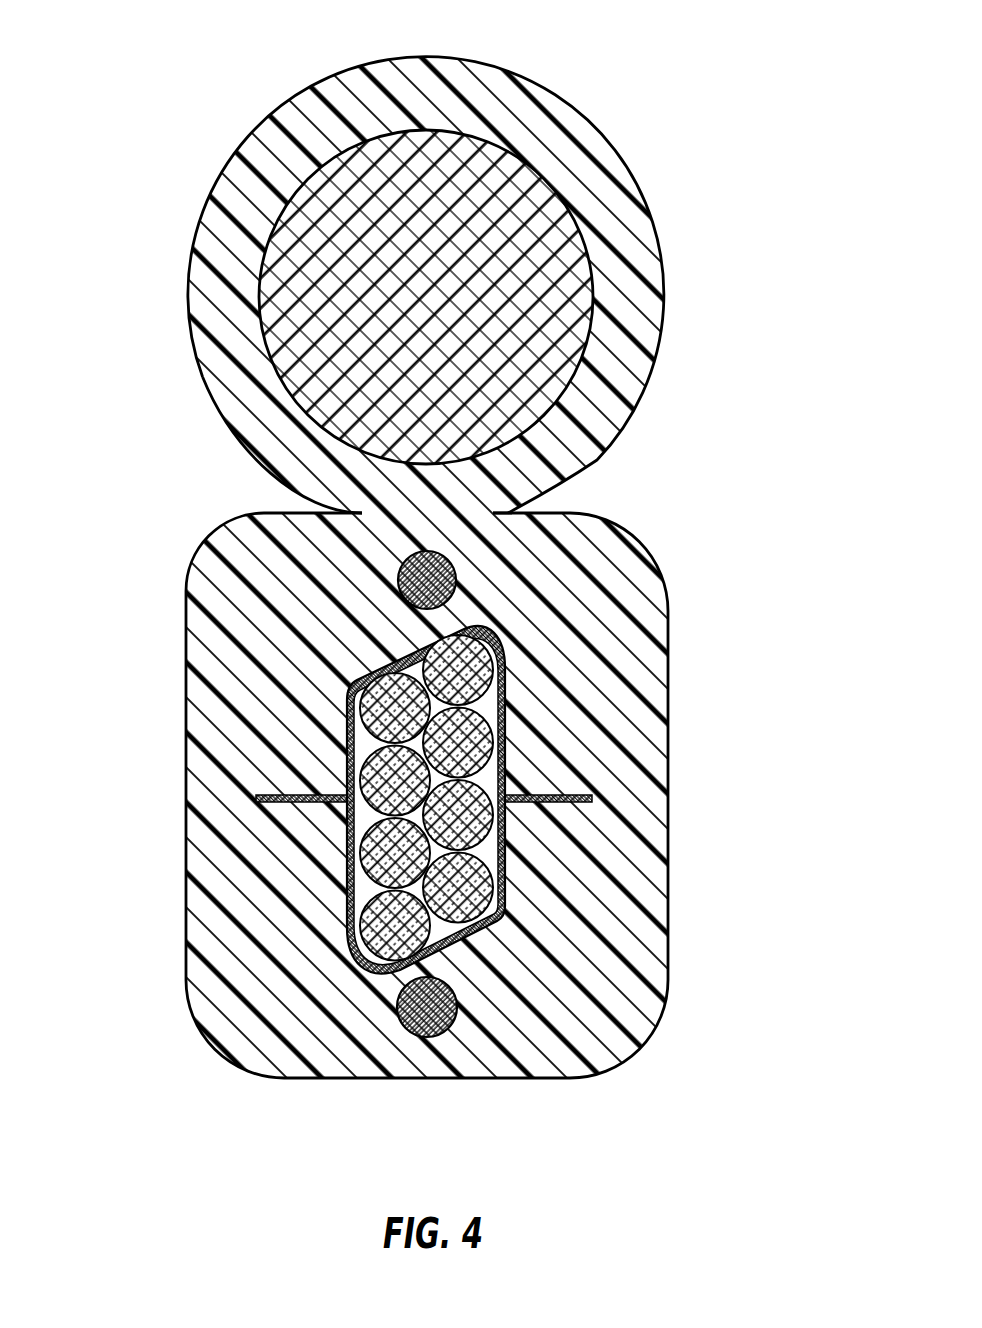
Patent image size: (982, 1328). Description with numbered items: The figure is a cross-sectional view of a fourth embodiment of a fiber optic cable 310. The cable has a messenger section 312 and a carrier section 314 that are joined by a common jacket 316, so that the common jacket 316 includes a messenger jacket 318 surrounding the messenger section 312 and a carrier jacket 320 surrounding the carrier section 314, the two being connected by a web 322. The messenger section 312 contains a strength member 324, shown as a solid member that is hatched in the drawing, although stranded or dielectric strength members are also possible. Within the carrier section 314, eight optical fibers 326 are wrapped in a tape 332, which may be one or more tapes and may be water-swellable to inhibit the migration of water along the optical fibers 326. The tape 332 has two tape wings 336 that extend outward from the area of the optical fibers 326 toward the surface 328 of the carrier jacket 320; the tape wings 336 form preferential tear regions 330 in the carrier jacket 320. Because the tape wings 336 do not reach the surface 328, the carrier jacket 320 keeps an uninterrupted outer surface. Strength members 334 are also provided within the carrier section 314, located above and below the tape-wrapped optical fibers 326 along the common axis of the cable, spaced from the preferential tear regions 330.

The fiber optic cable 310 is at (735, 145).
The messenger section 312 is at (592, 93).
The carrier section 314 is at (660, 620).
The common jacket 316 is at (295, 463).
The messenger jacket 318 is at (200, 272).
The carrier jacket 320 is at (210, 573).
The web 322 is at (510, 512).
The strength member 324 is at (495, 303).
The optical fibers 326 is at (387, 777).
The surface 328 is at (187, 917).
The preferential tear regions 330 is at (187, 801).
The tape 332 is at (510, 713).
The strength members 334 is at (445, 585).
The tape wings 336 is at (290, 795).